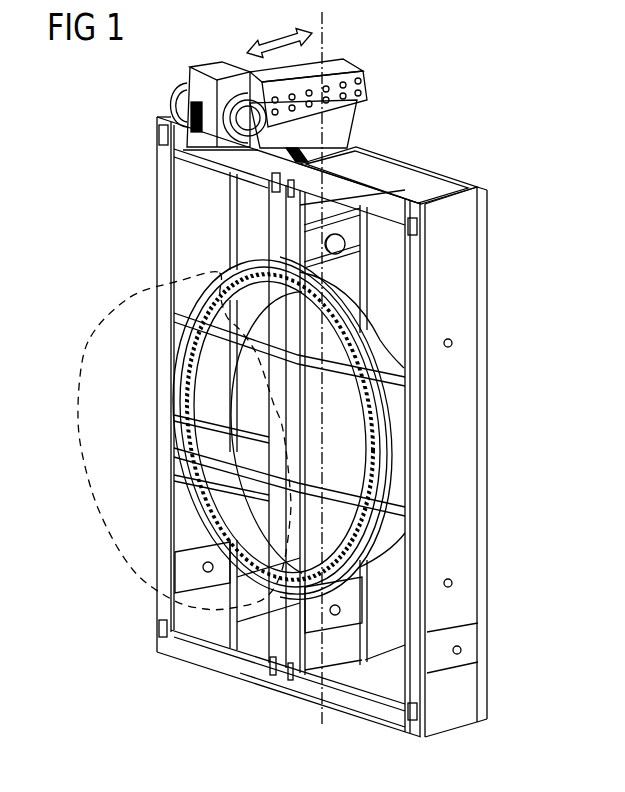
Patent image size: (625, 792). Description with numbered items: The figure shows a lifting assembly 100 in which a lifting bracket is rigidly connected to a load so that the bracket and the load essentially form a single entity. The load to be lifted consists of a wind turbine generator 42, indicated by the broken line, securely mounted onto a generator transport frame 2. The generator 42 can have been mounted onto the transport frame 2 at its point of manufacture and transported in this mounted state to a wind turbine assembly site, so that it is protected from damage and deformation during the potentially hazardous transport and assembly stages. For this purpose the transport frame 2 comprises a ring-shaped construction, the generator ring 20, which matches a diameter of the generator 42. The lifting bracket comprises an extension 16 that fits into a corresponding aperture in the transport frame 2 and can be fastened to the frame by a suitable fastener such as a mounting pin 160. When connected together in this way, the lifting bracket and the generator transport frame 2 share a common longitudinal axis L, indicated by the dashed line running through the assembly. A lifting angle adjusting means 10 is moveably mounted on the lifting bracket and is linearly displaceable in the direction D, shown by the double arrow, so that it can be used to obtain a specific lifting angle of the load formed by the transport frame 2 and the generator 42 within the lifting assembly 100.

The lifting assembly 100 is at (118, 143).
The lifting angle adjusting means 10 is at (217, 68).
The generator transport frame 2 is at (365, 85).
The extension 16 is at (324, 128).
The mounting pin 160 is at (345, 246).
The generator ring 20 is at (378, 328).
The wind turbine generator 42 is at (107, 317).
The direction of linear displacement D is at (279, 33).
The common longitudinal axis L is at (324, 44).